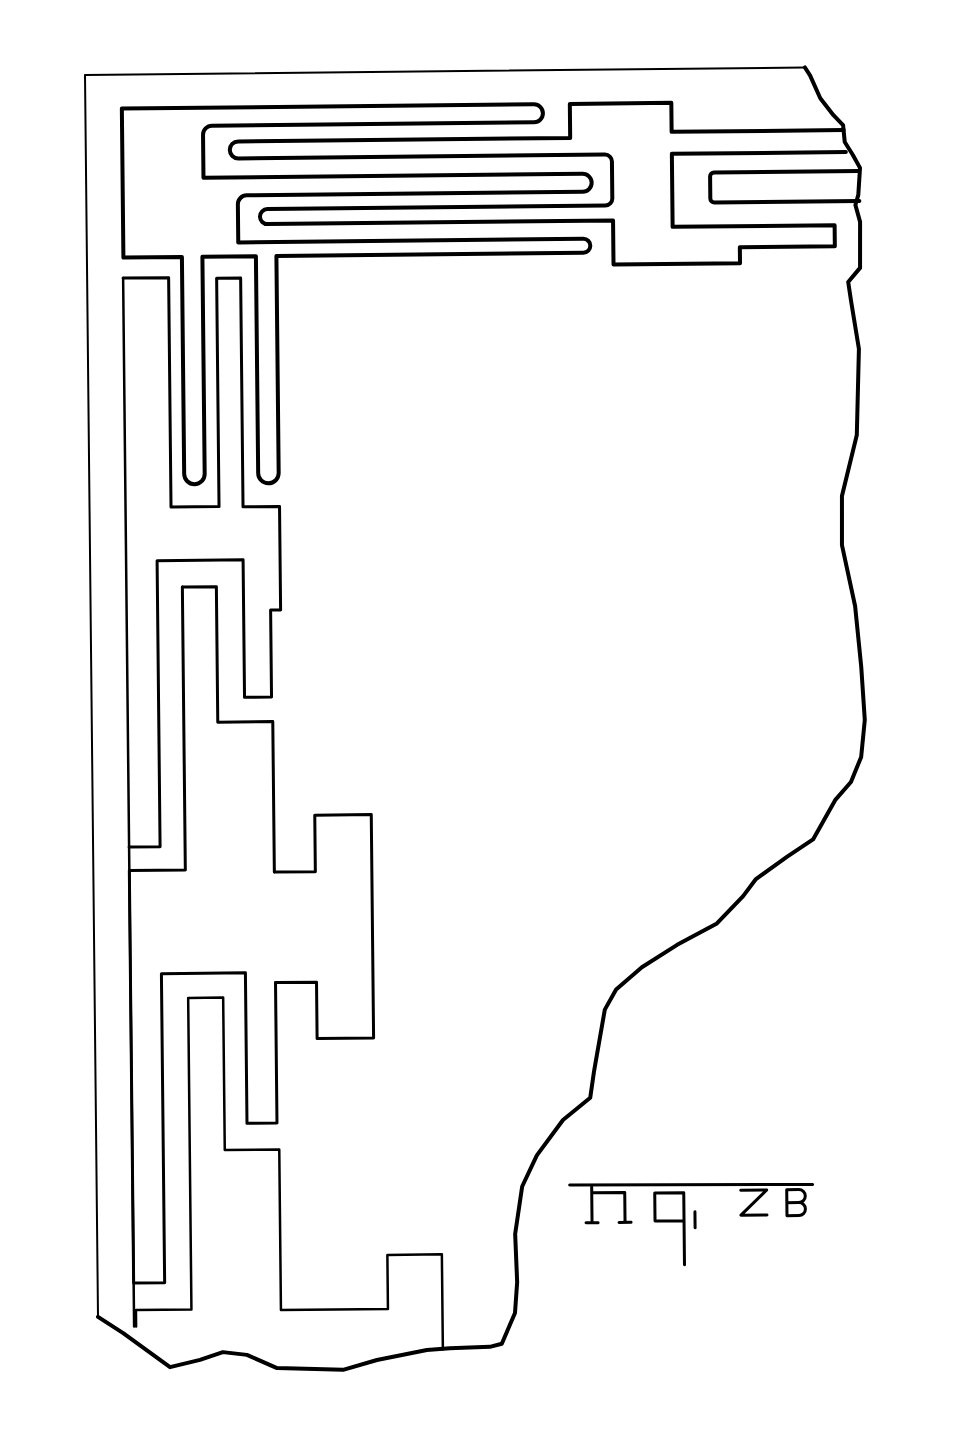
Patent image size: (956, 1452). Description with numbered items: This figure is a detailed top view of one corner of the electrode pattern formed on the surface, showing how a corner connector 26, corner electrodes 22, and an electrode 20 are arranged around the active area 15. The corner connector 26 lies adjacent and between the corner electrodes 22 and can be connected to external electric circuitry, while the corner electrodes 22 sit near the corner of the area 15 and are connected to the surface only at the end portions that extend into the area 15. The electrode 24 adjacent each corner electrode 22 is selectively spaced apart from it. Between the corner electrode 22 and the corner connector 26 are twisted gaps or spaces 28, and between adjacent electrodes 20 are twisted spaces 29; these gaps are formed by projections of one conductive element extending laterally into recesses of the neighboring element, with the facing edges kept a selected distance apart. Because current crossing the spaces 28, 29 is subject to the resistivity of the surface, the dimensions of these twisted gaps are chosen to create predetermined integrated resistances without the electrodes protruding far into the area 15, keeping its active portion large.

The area 15 is at (647, 459).
The electrode 20 is at (233, 927).
The corner electrode 22 is at (643, 260).
The electrode adjacent corner electrode 24 is at (343, 920).
The corner connector 26 is at (131, 166).
The spaces between corner electrode and corner connector 28 is at (348, 203).
The spaces between electrodes 29 is at (165, 754).